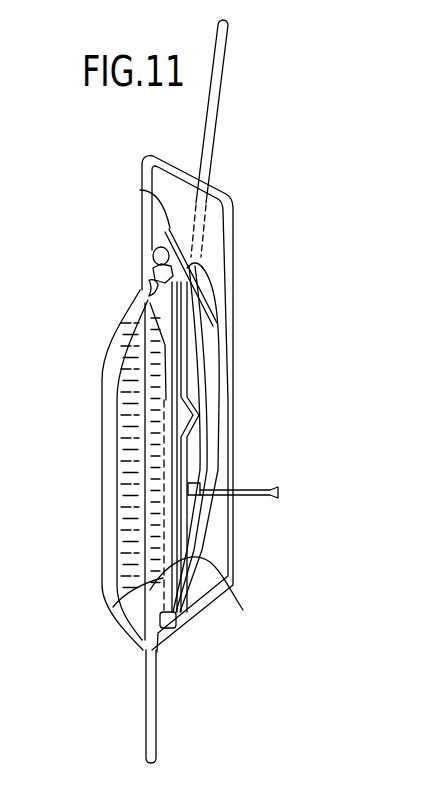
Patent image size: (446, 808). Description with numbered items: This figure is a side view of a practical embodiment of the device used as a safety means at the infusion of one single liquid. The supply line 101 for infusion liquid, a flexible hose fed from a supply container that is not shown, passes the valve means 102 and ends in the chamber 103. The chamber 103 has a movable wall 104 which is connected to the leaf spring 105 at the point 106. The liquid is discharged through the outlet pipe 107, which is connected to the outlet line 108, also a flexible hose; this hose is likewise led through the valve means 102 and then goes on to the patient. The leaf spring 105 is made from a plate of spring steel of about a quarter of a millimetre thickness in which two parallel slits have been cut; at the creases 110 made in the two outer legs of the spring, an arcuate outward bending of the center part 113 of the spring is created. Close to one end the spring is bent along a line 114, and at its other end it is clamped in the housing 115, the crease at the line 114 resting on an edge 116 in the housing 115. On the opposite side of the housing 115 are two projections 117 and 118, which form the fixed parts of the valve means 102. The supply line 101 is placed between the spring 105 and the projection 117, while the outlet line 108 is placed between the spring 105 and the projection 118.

The supply line 101 is at (213, 124).
The valve means 102 is at (195, 276).
The chamber 103 is at (112, 548).
The movable wall 104 is at (114, 606).
The leaf spring 105 is at (215, 428).
The point 106 is at (205, 500).
The outlet pipe 107 is at (149, 290).
The outlet line 108 is at (146, 700).
The creases 110 is at (197, 416).
The center part 113 is at (207, 382).
The line 114 is at (153, 256).
The housing 115 is at (233, 457).
The edge 116 is at (178, 277).
The projection 117 is at (235, 300).
The projection 118 is at (140, 190).